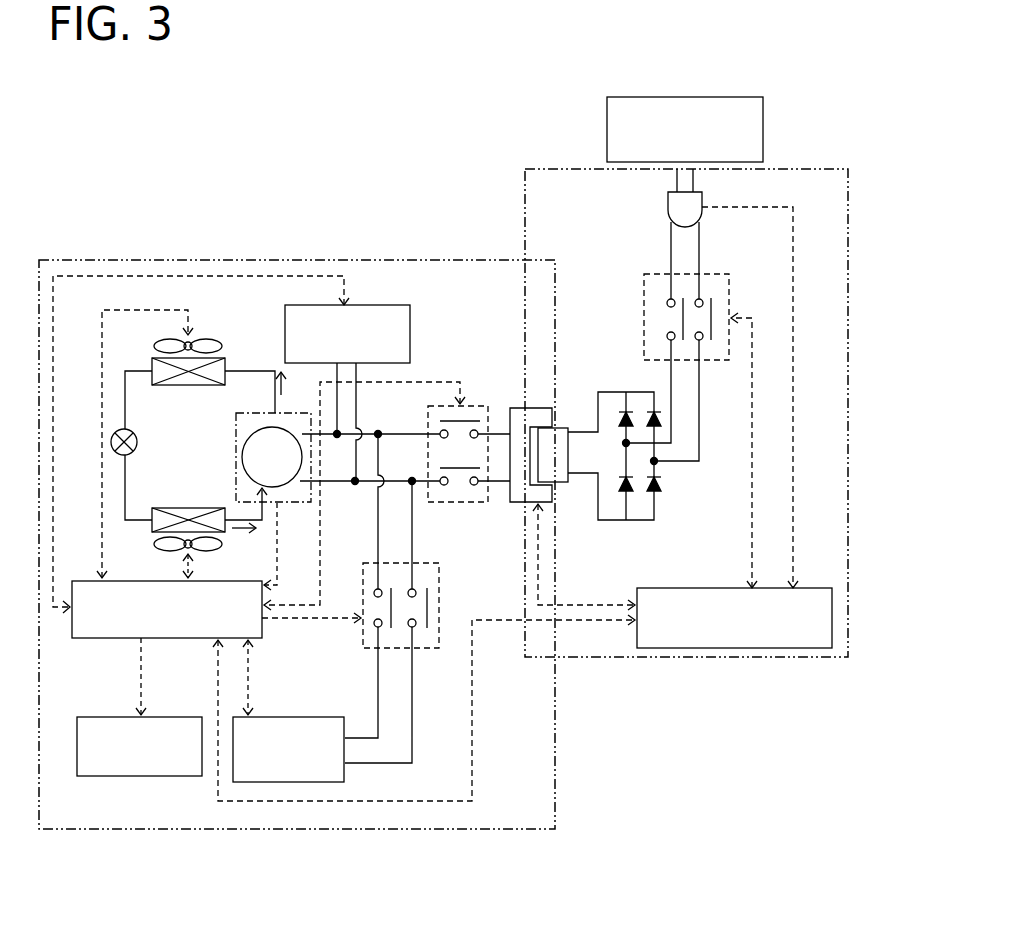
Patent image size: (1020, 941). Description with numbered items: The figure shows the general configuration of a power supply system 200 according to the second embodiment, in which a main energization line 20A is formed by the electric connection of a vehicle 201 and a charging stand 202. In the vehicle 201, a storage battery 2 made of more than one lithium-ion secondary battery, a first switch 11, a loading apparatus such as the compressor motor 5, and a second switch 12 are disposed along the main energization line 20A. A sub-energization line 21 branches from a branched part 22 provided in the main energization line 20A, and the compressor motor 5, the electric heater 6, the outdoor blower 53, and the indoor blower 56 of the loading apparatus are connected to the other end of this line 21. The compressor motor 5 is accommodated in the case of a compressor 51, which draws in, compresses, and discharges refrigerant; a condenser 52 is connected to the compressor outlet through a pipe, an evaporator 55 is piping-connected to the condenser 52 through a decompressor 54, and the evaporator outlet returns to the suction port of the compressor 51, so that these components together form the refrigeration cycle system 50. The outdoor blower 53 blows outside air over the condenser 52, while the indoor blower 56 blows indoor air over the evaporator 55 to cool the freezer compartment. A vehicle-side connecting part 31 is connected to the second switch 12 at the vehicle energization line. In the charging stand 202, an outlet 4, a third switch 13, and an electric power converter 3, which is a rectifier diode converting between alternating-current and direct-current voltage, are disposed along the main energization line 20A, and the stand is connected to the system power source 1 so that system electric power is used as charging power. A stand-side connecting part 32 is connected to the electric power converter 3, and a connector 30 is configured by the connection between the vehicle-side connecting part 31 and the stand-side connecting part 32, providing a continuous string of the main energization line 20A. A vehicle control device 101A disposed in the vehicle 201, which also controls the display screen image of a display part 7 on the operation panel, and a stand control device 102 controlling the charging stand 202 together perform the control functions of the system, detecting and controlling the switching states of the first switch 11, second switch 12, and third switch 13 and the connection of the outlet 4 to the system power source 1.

The system power source 1 is at (763, 125).
The storage battery 2 is at (330, 782).
The electric power converter 3 is at (641, 530).
The outlet 4 is at (666, 206).
The compressor motor 5 is at (287, 422).
The electric heater 6 is at (410, 318).
The display part 7 is at (143, 776).
The first switch 11 is at (443, 588).
The second switch 12 is at (478, 400).
The third switch 13 is at (640, 305).
The main energization line 20A is at (417, 706).
The sub-energization line 21 is at (330, 484).
The branched part 22 is at (352, 492).
The connector 30 is at (545, 419).
The vehicle-side connecting part 31 is at (520, 406).
The stand-side connecting part 32 is at (560, 426).
The refrigeration cycle system 50 is at (270, 376).
The compressor 51 is at (283, 504).
The condenser 52 is at (226, 364).
The outdoor blower 53 is at (192, 340).
The decompressor 54 is at (137, 442).
The evaporator 55 is at (152, 525).
The indoor blower 56 is at (192, 548).
The vehicle control device 101A is at (98, 638).
The stand control device 102 is at (770, 648).
The power supply system 200 is at (650, 700).
The vehicle 201 is at (556, 740).
The charging stand 202 is at (625, 658).